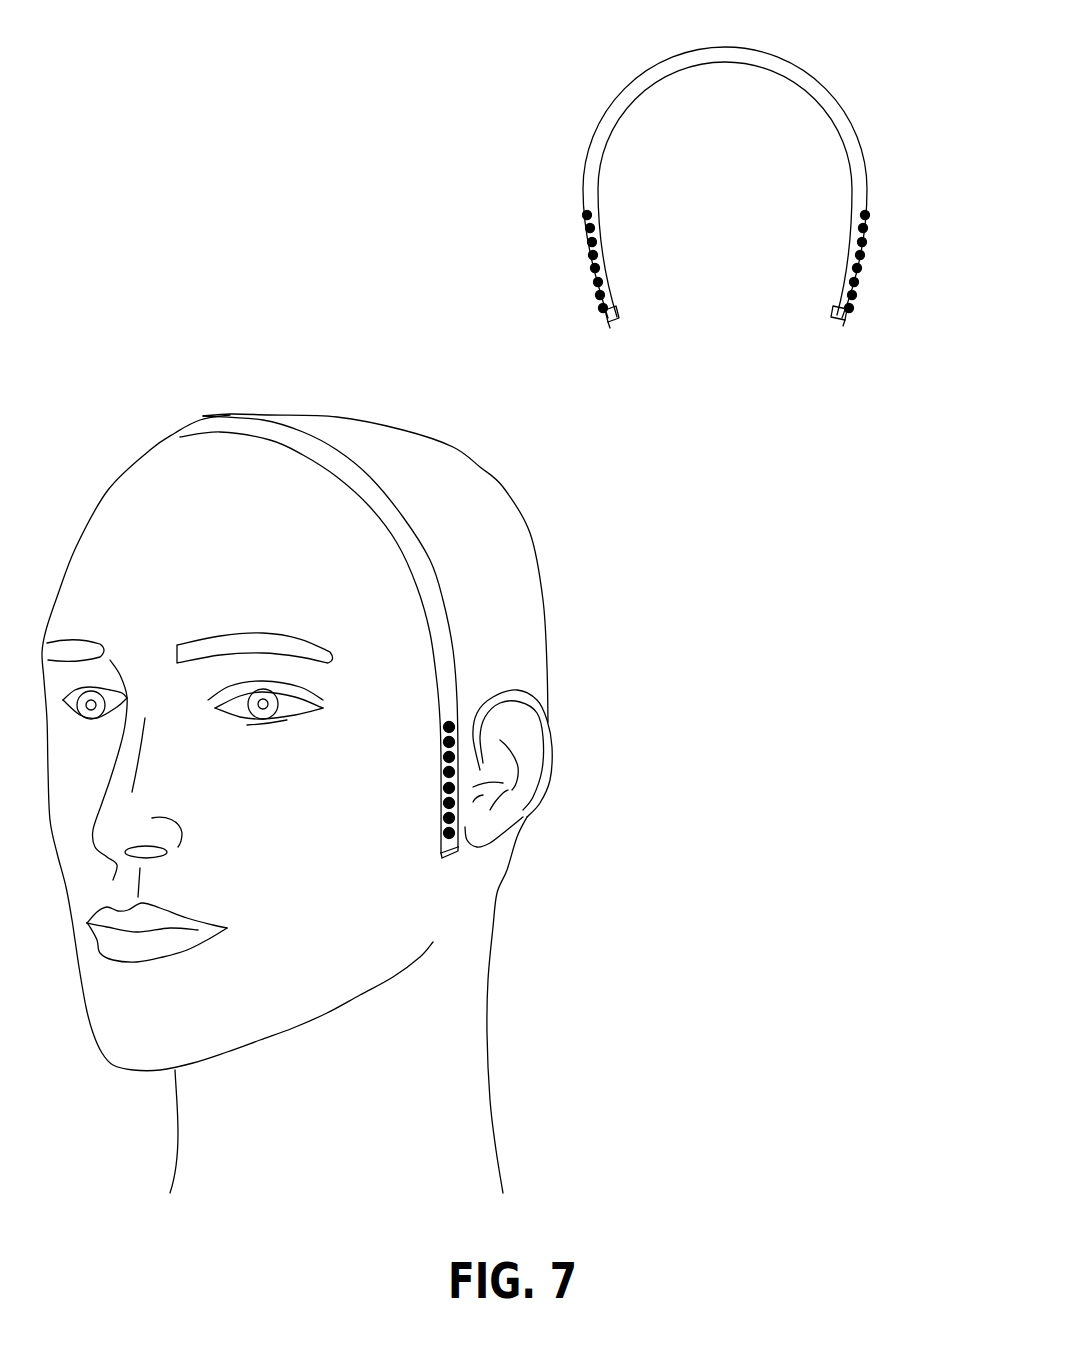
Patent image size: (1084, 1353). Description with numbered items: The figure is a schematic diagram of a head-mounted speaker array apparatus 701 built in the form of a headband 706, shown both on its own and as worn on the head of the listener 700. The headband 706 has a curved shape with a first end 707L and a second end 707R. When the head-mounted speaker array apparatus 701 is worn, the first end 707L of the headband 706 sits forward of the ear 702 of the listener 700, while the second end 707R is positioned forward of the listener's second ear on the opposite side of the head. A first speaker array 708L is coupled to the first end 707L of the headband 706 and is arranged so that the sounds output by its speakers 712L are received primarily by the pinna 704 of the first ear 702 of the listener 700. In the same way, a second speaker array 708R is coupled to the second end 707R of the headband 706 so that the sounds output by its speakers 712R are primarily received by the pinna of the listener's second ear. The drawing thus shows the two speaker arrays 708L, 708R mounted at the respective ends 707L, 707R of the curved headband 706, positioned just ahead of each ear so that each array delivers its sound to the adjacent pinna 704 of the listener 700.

The listener 700 is at (295, 803).
The head-mounted speaker array apparatus 701 is at (194, 405).
The ear 702 is at (527, 758).
The pinna 704 is at (533, 808).
The headband 706 is at (787, 64).
The first end 707L is at (838, 318).
The second end 707R is at (616, 321).
The first speaker array 708L is at (466, 682).
The second speaker array 708R is at (585, 215).
The speaker 712L is at (837, 308).
The speaker 712R is at (612, 314).